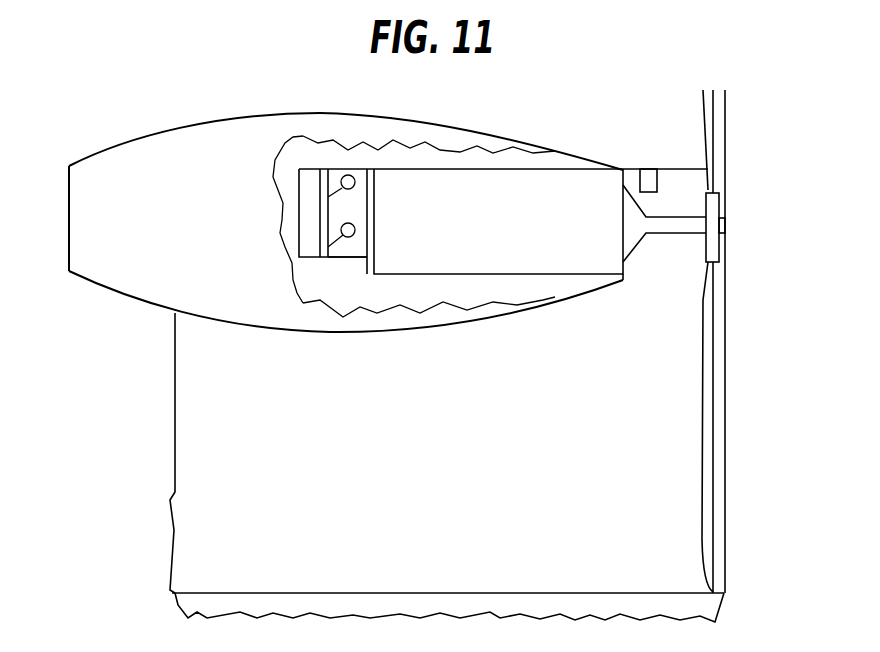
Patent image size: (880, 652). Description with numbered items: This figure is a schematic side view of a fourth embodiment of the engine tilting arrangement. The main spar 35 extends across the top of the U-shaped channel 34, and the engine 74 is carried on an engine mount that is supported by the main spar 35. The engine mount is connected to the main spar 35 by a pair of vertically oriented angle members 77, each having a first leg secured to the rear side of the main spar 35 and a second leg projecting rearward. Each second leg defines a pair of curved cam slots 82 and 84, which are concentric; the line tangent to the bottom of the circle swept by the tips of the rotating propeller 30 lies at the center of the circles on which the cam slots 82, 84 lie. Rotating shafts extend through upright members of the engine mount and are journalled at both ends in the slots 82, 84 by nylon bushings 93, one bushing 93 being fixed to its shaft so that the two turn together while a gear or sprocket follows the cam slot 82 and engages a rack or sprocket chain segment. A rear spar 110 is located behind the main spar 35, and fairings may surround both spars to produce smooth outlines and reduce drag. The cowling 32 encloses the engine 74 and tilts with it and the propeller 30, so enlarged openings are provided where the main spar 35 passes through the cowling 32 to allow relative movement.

The propeller 30 is at (710, 450).
The cowling 32 is at (188, 143).
The U-shaped channel 34 is at (192, 368).
The main spar 35 is at (305, 203).
The engine 74 is at (553, 277).
The angle member 77 is at (346, 252).
The curved cam slot 82 is at (330, 196).
The curved cam slot 84 is at (332, 235).
The nylon bushing 93 is at (357, 183).
The rear spar 110 is at (647, 180).